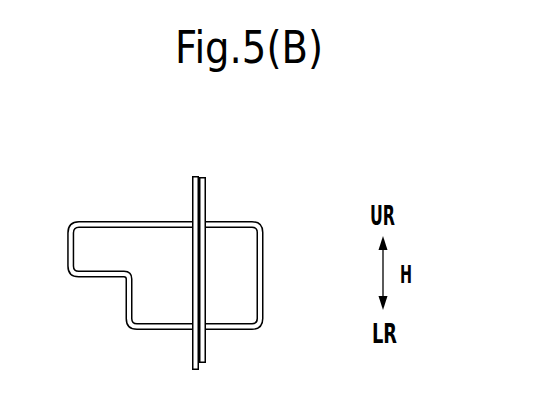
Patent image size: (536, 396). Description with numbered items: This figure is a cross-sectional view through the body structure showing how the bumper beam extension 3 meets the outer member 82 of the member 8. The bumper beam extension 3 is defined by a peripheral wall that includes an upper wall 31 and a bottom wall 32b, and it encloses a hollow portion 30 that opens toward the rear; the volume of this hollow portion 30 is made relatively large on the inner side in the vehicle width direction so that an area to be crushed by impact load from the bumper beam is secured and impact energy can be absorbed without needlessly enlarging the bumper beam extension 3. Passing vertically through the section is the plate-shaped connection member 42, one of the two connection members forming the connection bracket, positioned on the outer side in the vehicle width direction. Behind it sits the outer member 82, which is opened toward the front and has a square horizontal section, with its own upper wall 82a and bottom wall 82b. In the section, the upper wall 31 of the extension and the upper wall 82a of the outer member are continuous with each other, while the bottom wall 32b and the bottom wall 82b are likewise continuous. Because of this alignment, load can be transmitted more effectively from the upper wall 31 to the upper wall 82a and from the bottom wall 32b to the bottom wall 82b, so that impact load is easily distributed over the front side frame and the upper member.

The bumper beam extension 3 is at (125, 254).
The hollow portion 30 is at (168, 262).
The upper wall 31 is at (150, 221).
The bottom wall 32b is at (145, 333).
The connection member 42 is at (195, 175).
The bracket 8 is at (240, 267).
The outer member 82 is at (264, 268).
The upper wall 82a is at (228, 220).
The bottom wall 82b is at (238, 333).